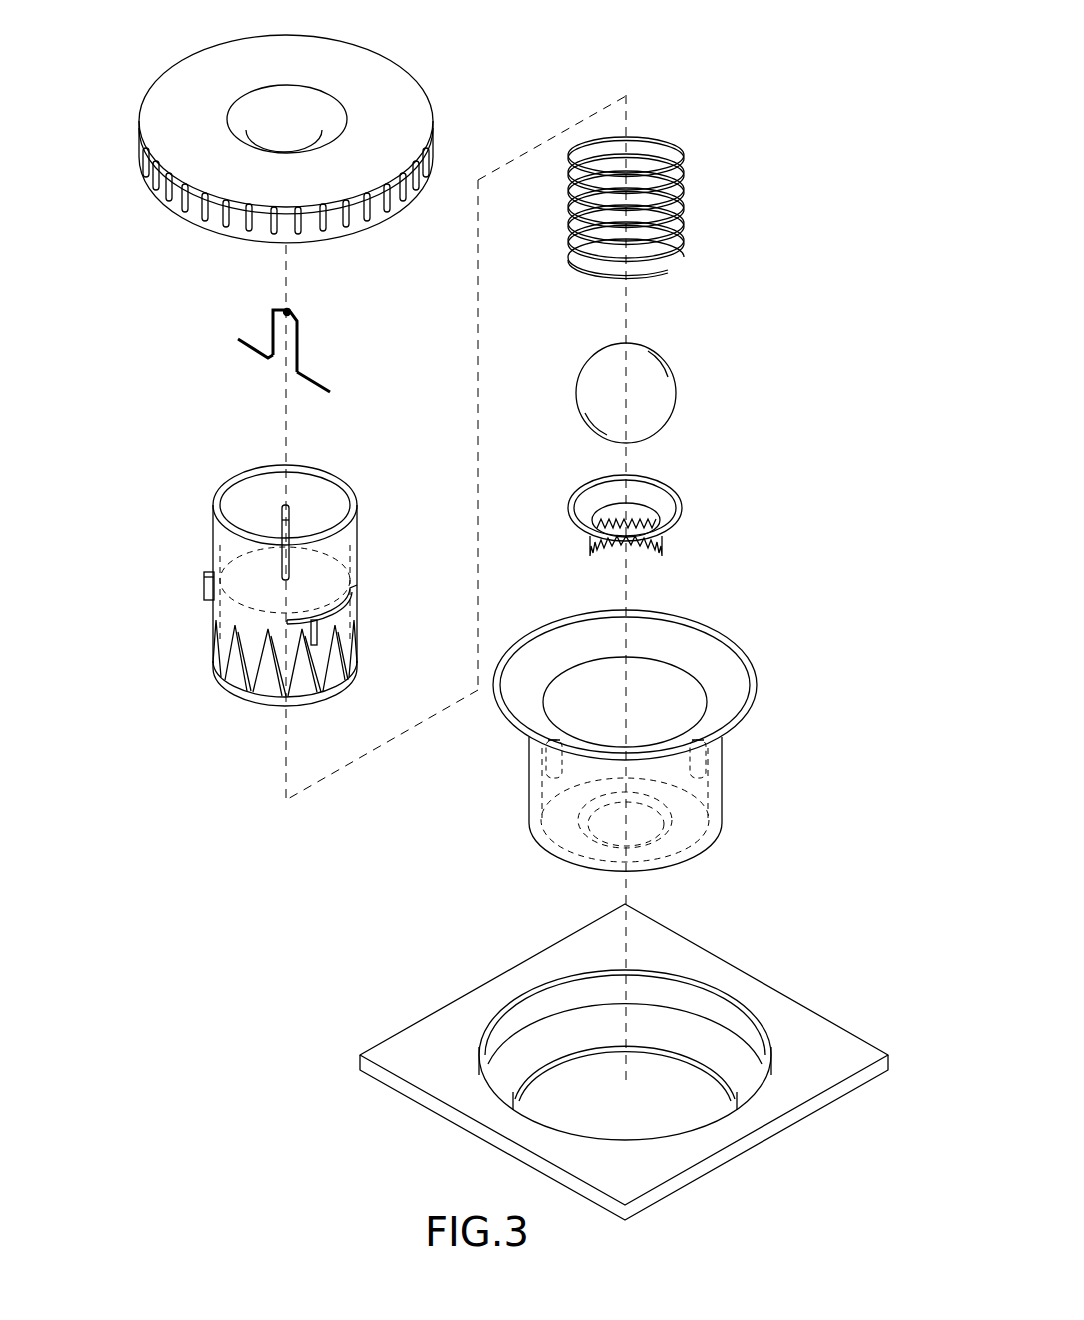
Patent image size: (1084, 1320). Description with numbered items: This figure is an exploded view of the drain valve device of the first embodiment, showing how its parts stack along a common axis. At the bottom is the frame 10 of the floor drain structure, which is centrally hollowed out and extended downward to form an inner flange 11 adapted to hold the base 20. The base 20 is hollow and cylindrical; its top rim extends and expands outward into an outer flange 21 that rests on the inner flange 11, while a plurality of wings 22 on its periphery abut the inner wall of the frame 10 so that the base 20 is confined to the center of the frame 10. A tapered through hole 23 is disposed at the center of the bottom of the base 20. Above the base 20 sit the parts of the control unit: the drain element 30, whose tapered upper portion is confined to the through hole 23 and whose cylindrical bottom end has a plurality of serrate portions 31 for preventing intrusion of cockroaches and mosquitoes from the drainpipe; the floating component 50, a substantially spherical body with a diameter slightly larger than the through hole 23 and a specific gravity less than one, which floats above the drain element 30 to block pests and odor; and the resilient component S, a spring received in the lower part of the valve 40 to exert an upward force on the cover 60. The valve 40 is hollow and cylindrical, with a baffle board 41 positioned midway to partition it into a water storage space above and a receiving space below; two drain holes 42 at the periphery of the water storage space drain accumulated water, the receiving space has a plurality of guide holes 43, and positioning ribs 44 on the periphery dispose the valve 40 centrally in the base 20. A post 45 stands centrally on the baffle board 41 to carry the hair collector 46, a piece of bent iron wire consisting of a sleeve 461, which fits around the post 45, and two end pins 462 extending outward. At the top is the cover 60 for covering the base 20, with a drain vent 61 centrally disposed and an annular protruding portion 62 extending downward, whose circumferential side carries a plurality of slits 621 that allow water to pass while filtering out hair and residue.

The frame 10 is at (613, 1062).
The inner flange 11 is at (712, 1045).
The base 20 is at (646, 752).
The outer flange 21 is at (708, 660).
The wings 22 is at (555, 770).
The through hole 23 is at (665, 830).
The drain element 30 is at (647, 534).
The serrate portions 31 is at (592, 553).
The valve 40 is at (278, 591).
The baffle board 41 is at (237, 555).
The drain holes 42 is at (330, 608).
The guide holes 43 is at (265, 688).
The positioning ribs 44 is at (212, 575).
The post 45 is at (283, 512).
The hair collector 46 is at (277, 347).
The sleeve 461 is at (283, 312).
The end pins 462 is at (250, 350).
The floating component 50 is at (645, 408).
The resilient component S is at (675, 208).
The cover 60 is at (310, 154).
The drain vent 61 is at (325, 110).
The annular protruding portion 62 is at (279, 219).
The slits 621 is at (218, 213).